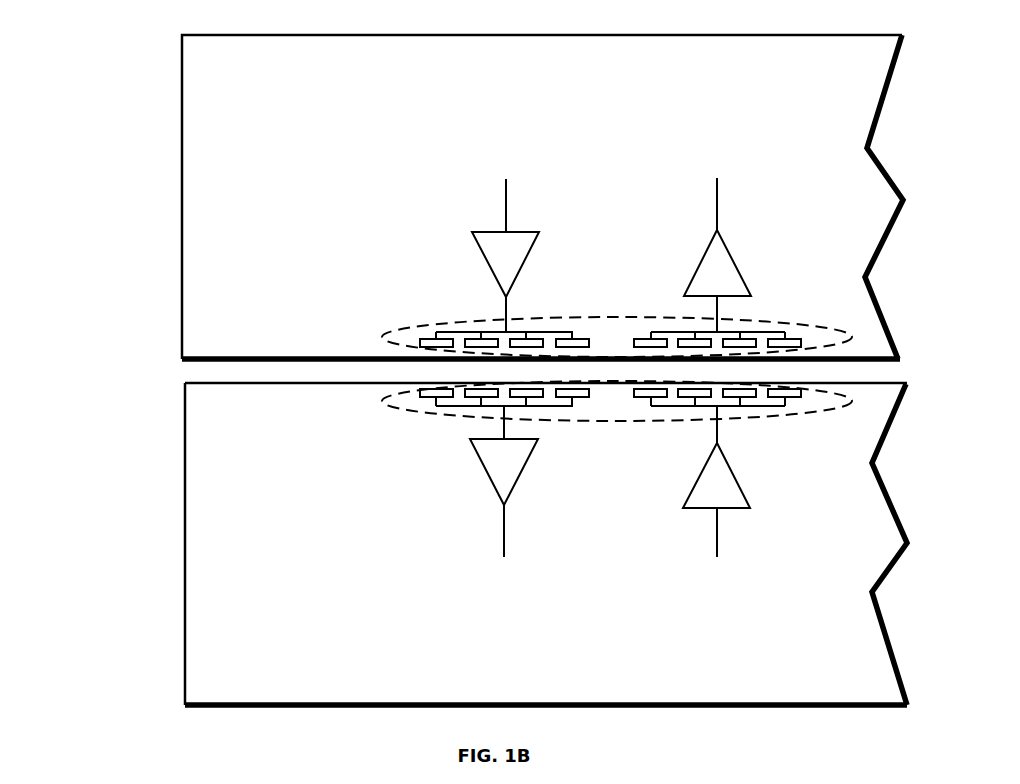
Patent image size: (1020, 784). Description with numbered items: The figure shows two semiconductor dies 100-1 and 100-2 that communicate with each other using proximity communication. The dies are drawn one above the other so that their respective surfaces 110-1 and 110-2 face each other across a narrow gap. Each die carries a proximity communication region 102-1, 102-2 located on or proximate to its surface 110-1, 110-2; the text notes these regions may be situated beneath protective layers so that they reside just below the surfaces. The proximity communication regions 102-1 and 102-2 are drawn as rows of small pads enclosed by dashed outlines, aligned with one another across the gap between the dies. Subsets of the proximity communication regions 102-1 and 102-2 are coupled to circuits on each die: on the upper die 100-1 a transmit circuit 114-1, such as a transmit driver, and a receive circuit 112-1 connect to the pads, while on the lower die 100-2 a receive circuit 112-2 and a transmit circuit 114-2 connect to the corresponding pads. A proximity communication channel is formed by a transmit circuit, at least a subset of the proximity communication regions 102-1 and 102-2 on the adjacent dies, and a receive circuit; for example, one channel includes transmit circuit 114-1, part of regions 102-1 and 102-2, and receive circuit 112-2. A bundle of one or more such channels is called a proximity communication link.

The semiconductor die 100-1 is at (542, 197).
The semiconductor die 100-2 is at (546, 544).
The surface 110-1 is at (237, 357).
The surface 110-2 is at (235, 383).
The proximity communication region 102-1 is at (438, 320).
The proximity communication region 102-2 is at (396, 405).
The receive circuit 112-1 is at (702, 253).
The receive circuit 112-2 is at (488, 472).
The transmit circuit 114-1 is at (490, 267).
The transmit circuit 114-2 is at (687, 508).